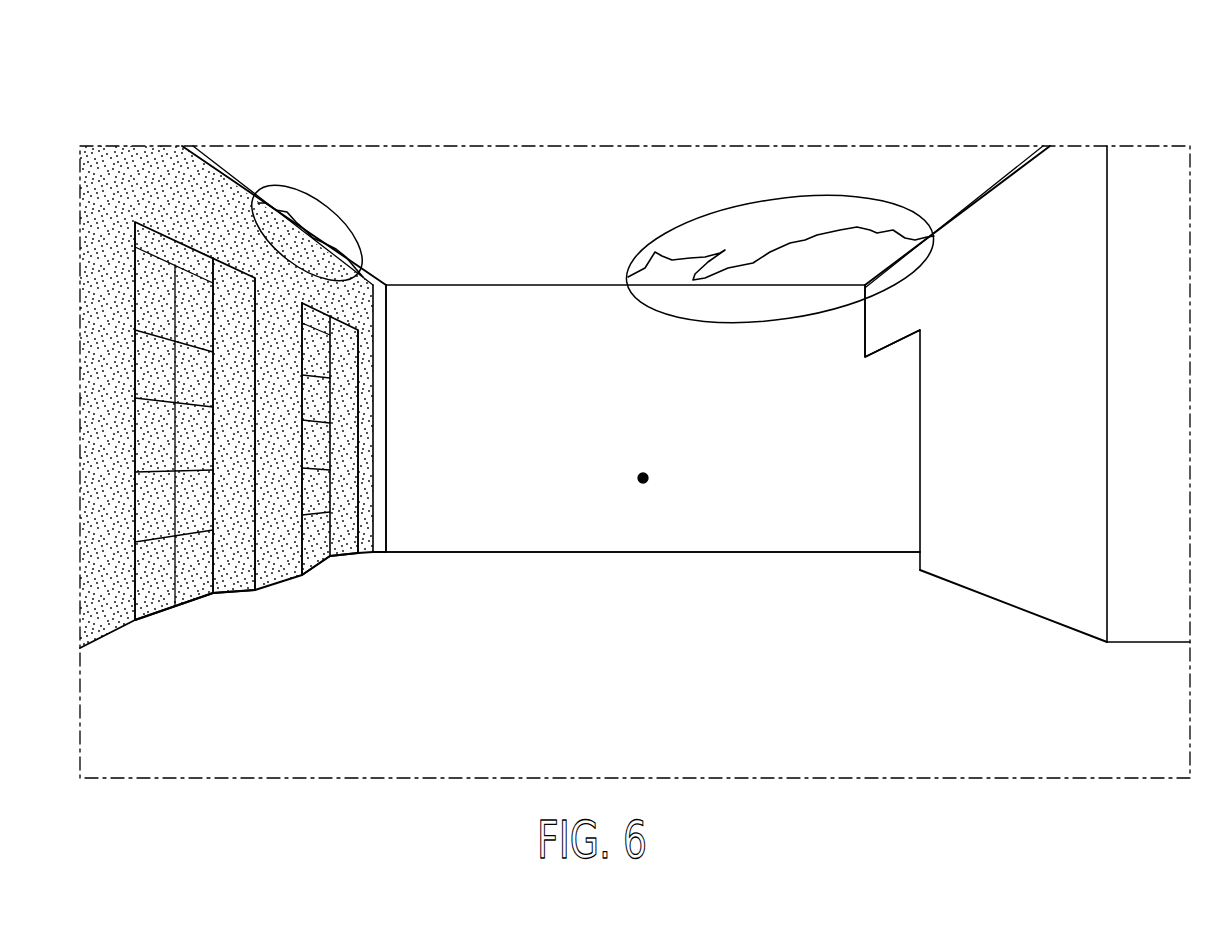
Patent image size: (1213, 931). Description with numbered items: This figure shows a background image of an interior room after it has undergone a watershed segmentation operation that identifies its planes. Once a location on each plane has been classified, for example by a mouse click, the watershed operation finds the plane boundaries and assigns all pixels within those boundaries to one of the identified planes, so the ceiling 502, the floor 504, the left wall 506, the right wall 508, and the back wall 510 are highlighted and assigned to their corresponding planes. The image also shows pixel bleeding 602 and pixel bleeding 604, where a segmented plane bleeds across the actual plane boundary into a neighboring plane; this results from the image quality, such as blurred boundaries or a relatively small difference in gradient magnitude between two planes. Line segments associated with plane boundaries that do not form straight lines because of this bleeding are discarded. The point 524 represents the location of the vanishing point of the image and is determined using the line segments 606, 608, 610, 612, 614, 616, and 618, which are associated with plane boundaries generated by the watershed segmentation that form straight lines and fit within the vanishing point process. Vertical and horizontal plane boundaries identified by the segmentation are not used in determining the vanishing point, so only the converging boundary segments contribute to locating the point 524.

The ceiling 502 is at (553, 225).
The floor 504 is at (628, 673).
The left wall 506 is at (232, 229).
The right wall 508 is at (1037, 469).
The back wall 510 is at (572, 469).
The point 524 is at (645, 474).
The pixel bleeding 602 is at (770, 198).
The pixel bleeding 604 is at (318, 192).
The line segment 606 is at (963, 212).
The line segment 608 is at (892, 340).
The line segment 610 is at (1011, 607).
The line segment 612 is at (280, 582).
The line segment 614 is at (108, 640).
The line segment 616 is at (137, 222).
The line segment 618 is at (346, 303).